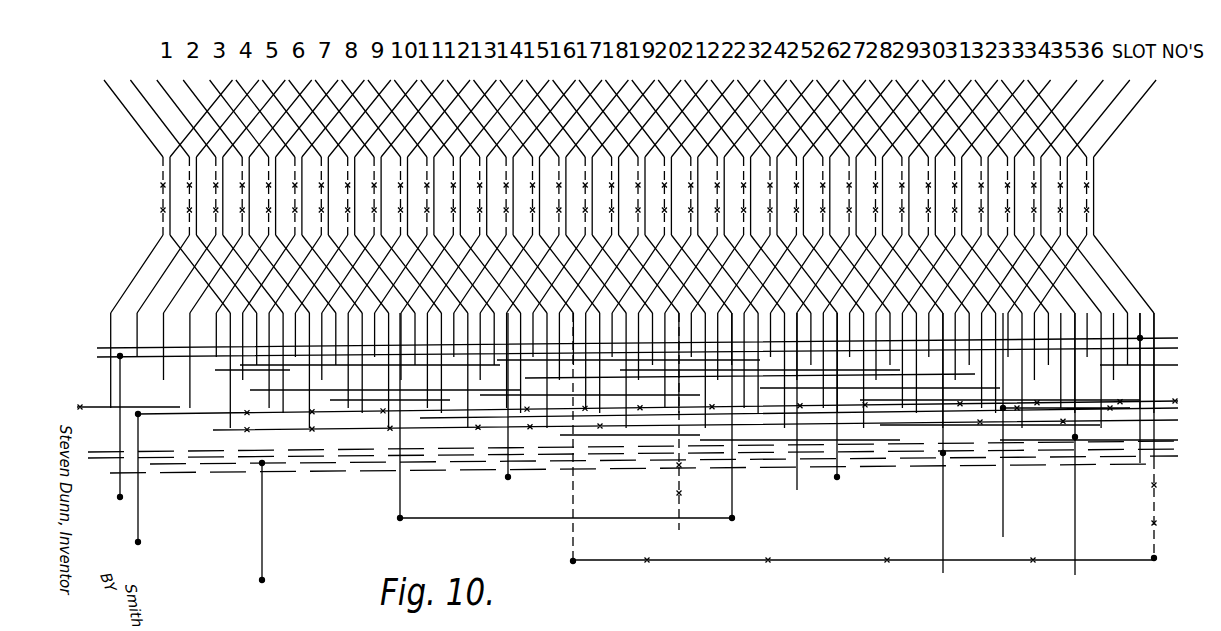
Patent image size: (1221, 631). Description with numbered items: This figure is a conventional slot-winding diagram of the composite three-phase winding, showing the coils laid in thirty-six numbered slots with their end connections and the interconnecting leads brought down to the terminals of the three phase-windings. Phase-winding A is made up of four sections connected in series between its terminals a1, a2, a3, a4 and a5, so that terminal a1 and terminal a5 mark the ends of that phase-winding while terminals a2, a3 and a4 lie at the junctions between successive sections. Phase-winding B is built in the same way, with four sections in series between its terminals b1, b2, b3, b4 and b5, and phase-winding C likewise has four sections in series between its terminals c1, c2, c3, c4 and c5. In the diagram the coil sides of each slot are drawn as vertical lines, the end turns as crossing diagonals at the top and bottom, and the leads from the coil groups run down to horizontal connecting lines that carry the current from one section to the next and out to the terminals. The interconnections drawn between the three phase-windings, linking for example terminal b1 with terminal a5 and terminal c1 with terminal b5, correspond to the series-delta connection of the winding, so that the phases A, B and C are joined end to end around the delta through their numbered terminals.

The terminal a1 is at (510, 413).
The terminal a2 is at (1128, 403).
The terminal a3 is at (805, 414).
The terminal a4 is at (118, 442).
The terminal a5 is at (750, 424).
The terminal b1 is at (551, 428).
The terminal b2 is at (695, 436).
The terminal b3 is at (1018, 433).
The terminal b4 is at (143, 497).
The terminal b5 is at (1153, 454).
The terminal c1 is at (847, 443).
The terminal c2 is at (1077, 459).
The terminal c3 is at (262, 541).
The terminal c4 is at (942, 458).
The terminal c5 is at (854, 403).